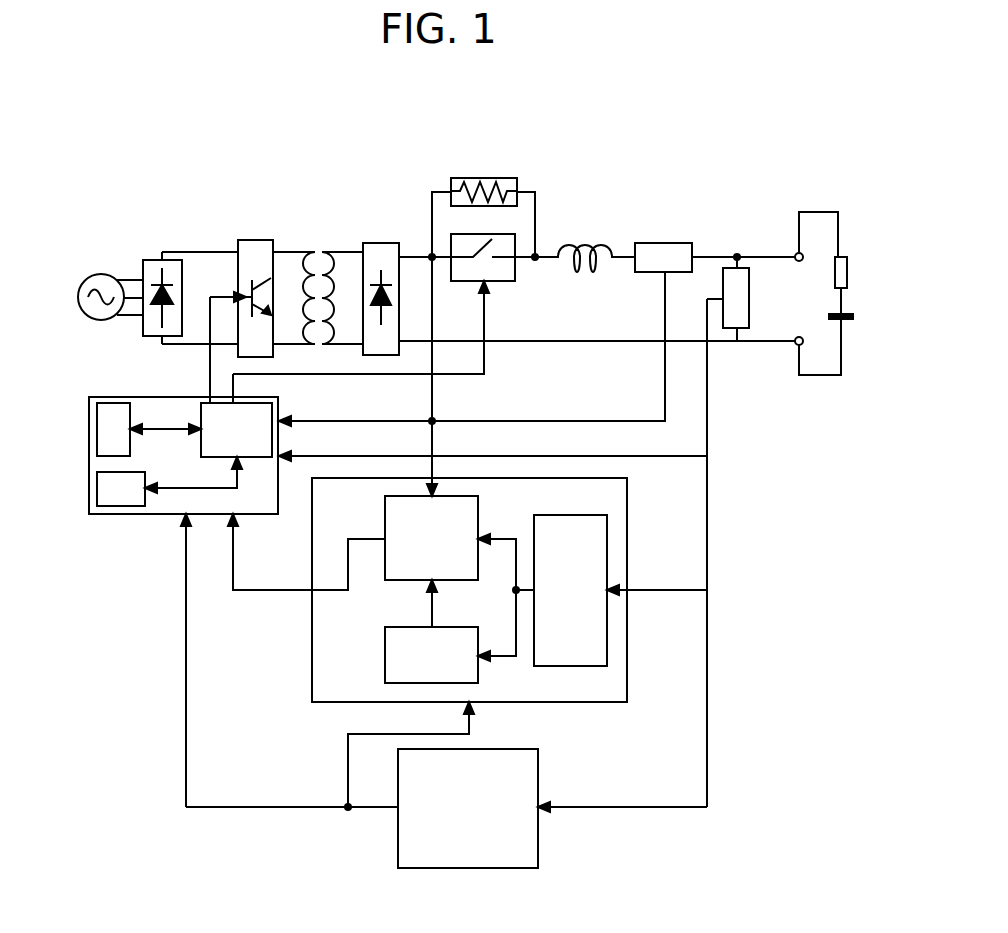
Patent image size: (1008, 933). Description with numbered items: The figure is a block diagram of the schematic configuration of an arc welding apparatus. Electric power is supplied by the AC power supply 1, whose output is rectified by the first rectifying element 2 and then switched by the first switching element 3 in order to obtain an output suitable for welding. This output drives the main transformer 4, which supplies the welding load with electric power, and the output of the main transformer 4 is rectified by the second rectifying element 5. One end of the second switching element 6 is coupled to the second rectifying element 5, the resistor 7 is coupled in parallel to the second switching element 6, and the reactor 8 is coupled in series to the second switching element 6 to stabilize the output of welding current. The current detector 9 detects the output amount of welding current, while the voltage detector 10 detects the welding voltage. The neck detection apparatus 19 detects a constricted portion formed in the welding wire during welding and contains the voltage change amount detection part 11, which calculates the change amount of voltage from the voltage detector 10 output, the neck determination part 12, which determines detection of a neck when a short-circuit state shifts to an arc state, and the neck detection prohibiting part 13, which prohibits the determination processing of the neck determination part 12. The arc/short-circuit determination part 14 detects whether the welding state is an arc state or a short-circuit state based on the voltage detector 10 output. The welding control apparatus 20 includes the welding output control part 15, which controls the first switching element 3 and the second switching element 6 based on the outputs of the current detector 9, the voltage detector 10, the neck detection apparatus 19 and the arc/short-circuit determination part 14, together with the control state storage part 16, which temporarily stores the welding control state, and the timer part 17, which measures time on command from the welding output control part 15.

The AC power supply 1 is at (106, 276).
The first rectifying element 2 is at (150, 258).
The first switching element 3 is at (255, 240).
The main transformer 4 is at (320, 246).
The second rectifying element 5 is at (379, 243).
The second switching element 6 is at (510, 282).
The resistor 7 is at (484, 177).
The reactor 8 is at (588, 240).
The current detector 9 is at (664, 243).
The voltage detector 10 is at (747, 295).
The voltage change amount detection part 11 is at (572, 515).
The neck determination part 12 is at (478, 515).
The neck detection prohibiting part 13 is at (383, 657).
The arc/short-circuit determination part 14 is at (468, 868).
The welding output control part 15 is at (240, 403).
The control state storage part 16 is at (96, 427).
The timer part 17 is at (120, 507).
The neck detection apparatus 19 is at (557, 703).
The welding control apparatus 20 is at (88, 457).